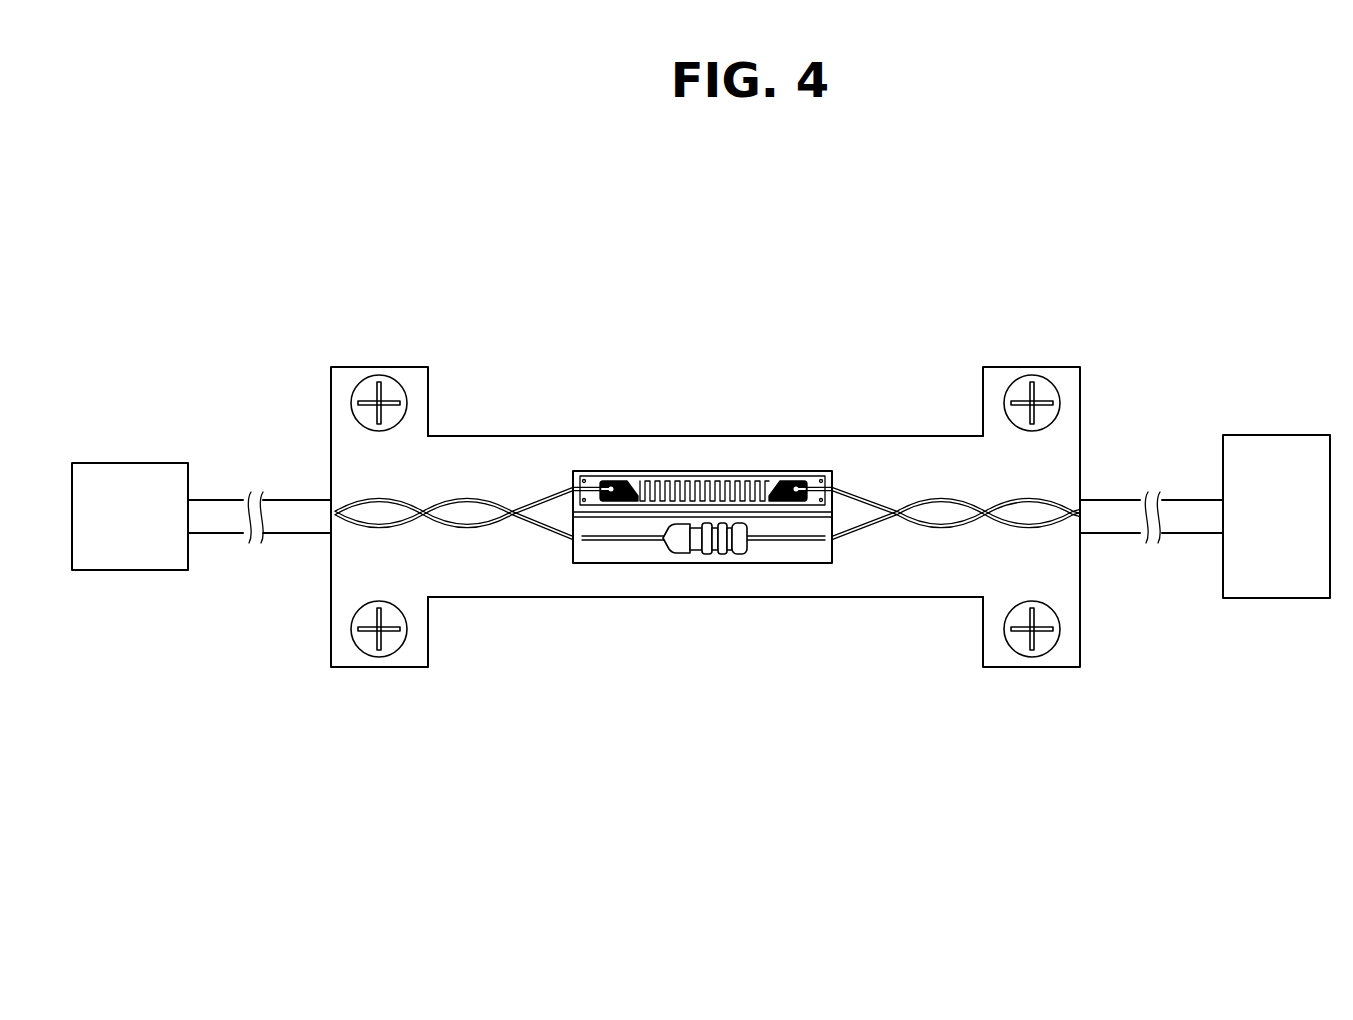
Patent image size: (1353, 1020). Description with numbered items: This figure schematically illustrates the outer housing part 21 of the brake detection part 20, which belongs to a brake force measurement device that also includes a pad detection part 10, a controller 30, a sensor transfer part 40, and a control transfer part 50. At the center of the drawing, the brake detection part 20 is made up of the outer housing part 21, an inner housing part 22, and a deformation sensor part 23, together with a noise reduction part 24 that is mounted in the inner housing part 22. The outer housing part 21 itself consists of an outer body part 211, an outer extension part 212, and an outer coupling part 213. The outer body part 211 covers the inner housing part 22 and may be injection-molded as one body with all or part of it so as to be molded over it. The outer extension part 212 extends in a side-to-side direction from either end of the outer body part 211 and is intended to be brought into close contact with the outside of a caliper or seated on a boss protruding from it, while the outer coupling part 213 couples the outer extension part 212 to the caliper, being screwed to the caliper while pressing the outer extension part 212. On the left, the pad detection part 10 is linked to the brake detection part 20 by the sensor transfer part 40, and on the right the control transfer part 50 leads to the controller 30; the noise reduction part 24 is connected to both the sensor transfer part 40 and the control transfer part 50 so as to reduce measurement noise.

The pad detection part 10 is at (130, 570).
The brake detection part 20 is at (925, 368).
The outer housing part 21 is at (728, 591).
The outer body part 211 is at (887, 597).
The outer extension part 212 is at (1003, 667).
The outer coupling part 213 is at (873, 747).
The inner housing part 22 is at (702, 527).
The deformation sensor part 23 is at (705, 476).
The noise reduction part 24 is at (717, 563).
The controller 30 is at (1278, 598).
The sensor transfer part 40 is at (294, 535).
The control transfer part 50 is at (1118, 535).